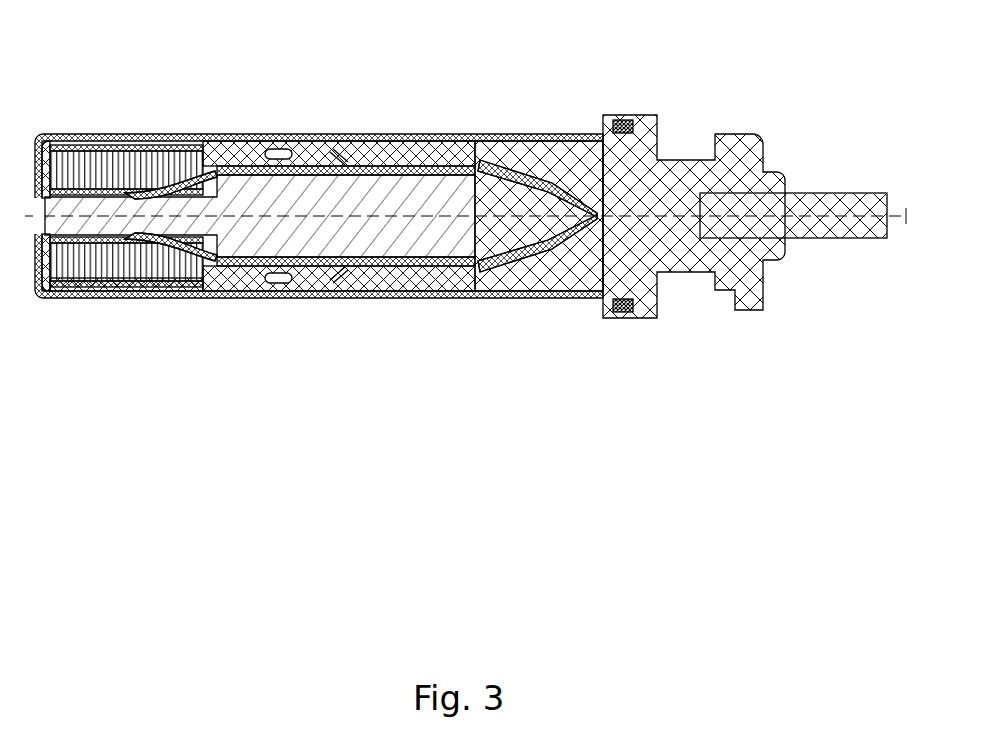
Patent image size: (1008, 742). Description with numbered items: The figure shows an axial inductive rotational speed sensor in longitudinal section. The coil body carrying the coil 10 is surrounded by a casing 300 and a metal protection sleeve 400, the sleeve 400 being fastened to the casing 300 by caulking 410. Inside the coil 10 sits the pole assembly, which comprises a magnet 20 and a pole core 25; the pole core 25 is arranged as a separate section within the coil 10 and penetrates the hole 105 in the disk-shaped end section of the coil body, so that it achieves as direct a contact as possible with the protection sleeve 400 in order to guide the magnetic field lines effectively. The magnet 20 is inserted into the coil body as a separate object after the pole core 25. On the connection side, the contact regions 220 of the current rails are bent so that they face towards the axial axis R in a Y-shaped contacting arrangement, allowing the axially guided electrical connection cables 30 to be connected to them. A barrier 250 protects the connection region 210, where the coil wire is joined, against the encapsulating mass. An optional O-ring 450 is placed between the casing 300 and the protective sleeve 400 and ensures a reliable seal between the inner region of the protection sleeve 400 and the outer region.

The hole 105 is at (22, 228).
The sleeve 400 is at (197, 136).
The connection region 210 is at (277, 150).
The barrier 250 is at (330, 150).
The coil 10 is at (105, 272).
The magnet 20 is at (403, 250).
The pole core 25 is at (185, 234).
The caulking 410 is at (310, 142).
The contact regions 220 is at (505, 160).
The casing 300 is at (625, 152).
The O-ring 450 is at (628, 130).
The electrical connection cables 30 is at (843, 200).
The axial axis R is at (906, 216).